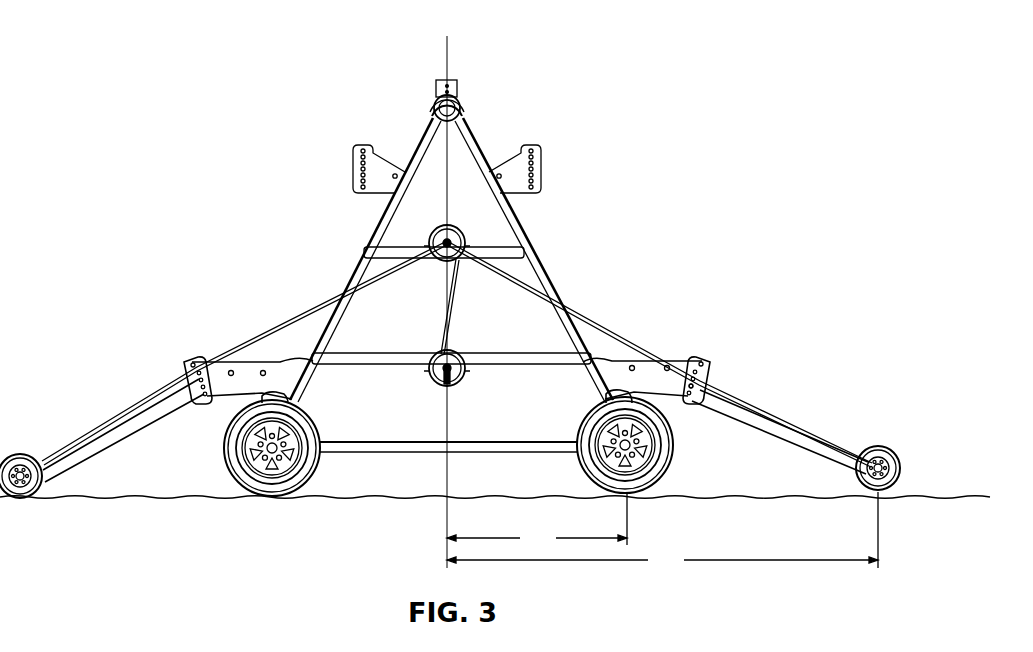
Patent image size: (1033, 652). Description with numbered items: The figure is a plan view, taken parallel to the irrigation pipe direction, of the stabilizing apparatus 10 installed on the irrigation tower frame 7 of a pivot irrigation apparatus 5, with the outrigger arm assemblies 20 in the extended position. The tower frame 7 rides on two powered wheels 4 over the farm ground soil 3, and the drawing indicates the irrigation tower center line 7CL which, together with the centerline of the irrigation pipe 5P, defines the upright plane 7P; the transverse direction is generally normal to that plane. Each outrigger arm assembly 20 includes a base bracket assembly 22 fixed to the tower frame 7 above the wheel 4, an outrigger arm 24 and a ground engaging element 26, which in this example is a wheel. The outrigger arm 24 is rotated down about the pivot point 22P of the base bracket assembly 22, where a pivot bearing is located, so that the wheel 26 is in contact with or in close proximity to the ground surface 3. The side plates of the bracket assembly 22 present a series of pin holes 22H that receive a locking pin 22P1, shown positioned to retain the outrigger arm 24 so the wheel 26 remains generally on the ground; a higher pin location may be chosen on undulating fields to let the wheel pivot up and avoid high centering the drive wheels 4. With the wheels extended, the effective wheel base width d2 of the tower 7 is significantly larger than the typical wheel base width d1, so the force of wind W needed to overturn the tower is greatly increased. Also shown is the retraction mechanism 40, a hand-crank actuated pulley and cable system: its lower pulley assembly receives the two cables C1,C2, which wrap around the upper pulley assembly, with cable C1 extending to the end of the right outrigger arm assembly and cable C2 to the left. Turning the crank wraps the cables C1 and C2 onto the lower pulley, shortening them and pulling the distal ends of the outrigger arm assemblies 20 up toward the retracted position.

The stabilizing apparatus 10 is at (206, 71).
The irrigation tower center line 7CL is at (449, 46).
The irrigation tower frame 7 is at (566, 268).
The irrigation apparatus 5 is at (426, 92).
The wind W is at (427, 108).
The irrigation pipe 5P is at (463, 106).
The upright plane 7P is at (452, 158).
The retraction mechanism 40 is at (435, 274).
The cables C1,C2 is at (450, 305).
The cable C1 is at (584, 320).
The cable C2 is at (137, 405).
The farm ground soil 3 is at (96, 497).
The base bracket assembly 22 is at (691, 360).
The pivot point 22P is at (632, 362).
The pin holes 22H is at (715, 368).
The locking pin 22P1 is at (713, 382).
The outrigger arm 24 is at (745, 428).
The outrigger arm assembly 20 is at (781, 451).
The ground engaging element 26 is at (875, 443).
The powered wheels 4 is at (566, 460).
The wheel base width d1 is at (537, 539).
The effective wheel base width d2 is at (662, 560).